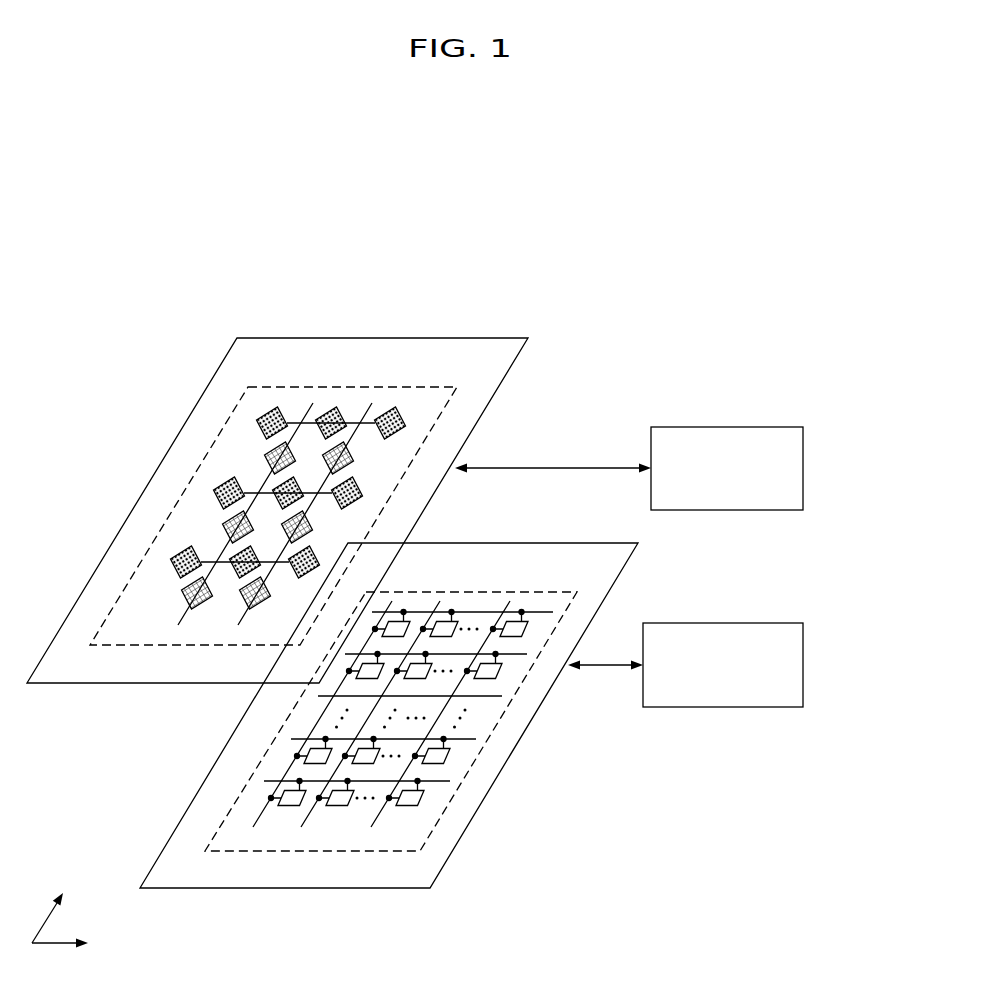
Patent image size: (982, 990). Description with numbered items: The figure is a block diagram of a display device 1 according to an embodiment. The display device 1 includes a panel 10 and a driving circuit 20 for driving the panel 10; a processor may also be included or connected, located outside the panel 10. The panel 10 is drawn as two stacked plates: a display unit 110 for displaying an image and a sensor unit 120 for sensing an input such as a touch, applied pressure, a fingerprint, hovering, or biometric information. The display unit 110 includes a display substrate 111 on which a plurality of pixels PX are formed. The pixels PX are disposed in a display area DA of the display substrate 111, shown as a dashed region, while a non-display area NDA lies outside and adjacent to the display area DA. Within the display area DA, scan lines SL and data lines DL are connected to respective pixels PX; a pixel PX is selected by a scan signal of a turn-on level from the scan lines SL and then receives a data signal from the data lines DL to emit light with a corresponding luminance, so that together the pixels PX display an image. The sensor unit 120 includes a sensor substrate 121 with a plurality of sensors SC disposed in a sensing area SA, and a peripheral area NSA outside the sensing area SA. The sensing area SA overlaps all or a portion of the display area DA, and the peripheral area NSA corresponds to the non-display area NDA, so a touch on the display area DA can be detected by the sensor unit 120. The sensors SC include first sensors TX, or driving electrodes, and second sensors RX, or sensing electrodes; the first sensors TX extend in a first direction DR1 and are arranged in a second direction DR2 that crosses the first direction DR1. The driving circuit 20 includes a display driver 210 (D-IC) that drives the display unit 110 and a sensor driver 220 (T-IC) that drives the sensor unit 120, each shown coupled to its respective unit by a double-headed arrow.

The display device 1 is at (652, 264).
The panel 10 is at (96, 707).
The driving circuit 20 is at (860, 482).
The display unit 110 is at (190, 783).
The display substrate 111 is at (452, 853).
The sensor unit 120 is at (179, 695).
The sensor substrate 121 is at (147, 482).
The display driver 210 is at (803, 658).
The sensor driver 220 is at (803, 470).
The sensing area SA is at (456, 372).
The peripheral area NSA is at (448, 437).
The sensors SC is at (119, 383).
The second sensors RX is at (261, 420).
The first sensors TX is at (265, 452).
The display area DA is at (551, 580).
The non-display area NDA is at (583, 612).
The pixels PX is at (503, 668).
The scan lines SL is at (462, 740).
The data lines DL is at (407, 770).
The first direction DR1 is at (55, 905).
The second direction DR2 is at (79, 946).